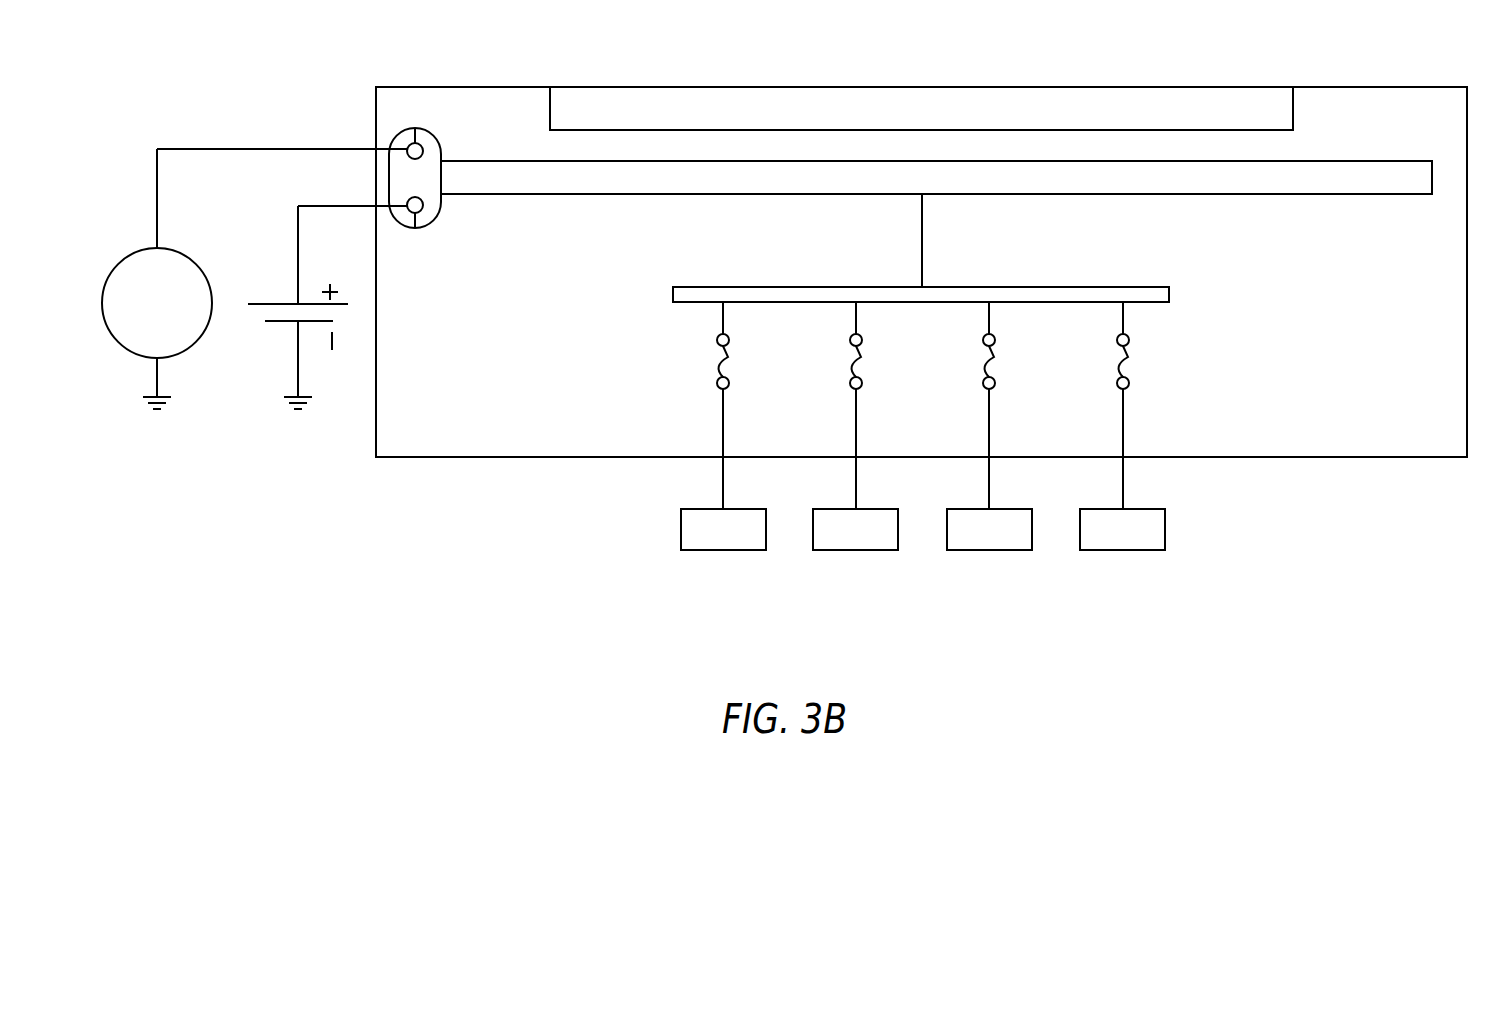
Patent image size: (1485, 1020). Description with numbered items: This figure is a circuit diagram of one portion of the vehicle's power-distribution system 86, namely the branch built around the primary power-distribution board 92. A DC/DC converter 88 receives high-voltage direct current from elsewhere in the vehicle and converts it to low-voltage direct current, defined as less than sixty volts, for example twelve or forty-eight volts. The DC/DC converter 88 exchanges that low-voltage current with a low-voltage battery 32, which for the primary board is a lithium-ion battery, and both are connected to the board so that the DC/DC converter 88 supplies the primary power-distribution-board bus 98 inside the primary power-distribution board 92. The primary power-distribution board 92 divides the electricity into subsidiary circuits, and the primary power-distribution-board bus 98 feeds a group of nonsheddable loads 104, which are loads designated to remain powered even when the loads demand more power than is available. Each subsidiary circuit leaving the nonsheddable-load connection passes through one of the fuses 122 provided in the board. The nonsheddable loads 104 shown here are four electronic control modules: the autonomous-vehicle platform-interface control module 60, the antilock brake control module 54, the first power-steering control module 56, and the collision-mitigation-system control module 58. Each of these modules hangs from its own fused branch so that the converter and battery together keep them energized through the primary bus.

The power-distribution system 86 is at (965, 52).
The primary power-distribution board 92 is at (1408, 87).
The primary power-distribution-board bus 98 is at (1372, 161).
The nonsheddable loads 104 is at (1140, 287).
The DC/DC converter 88 is at (130, 252).
The low-voltage battery 32 is at (273, 323).
The fuse 122 is at (728, 357).
The autonomous-vehicle platform-interface control module 60 is at (697, 551).
The antilock brake control module 54 is at (830, 551).
The first power-steering control module 56 is at (965, 551).
The collision-mitigation-system control module 58 is at (1100, 551).